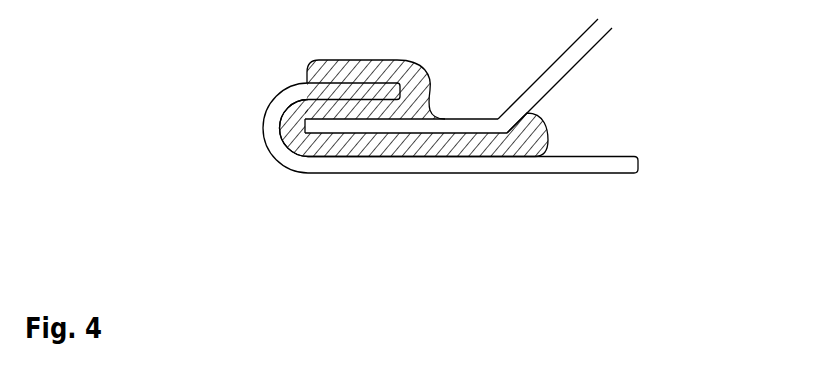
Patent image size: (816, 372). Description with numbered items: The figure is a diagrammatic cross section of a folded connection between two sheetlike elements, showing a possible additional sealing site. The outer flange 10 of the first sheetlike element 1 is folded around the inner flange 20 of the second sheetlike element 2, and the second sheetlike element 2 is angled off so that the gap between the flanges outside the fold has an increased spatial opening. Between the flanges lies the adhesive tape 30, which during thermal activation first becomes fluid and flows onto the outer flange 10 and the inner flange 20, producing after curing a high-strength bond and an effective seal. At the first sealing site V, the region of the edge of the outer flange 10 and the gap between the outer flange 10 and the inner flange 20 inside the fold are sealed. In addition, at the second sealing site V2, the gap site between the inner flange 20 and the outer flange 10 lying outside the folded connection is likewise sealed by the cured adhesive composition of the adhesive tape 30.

The first sheetlike element 1 is at (598, 164).
The outer flange 10 is at (312, 162).
The second sheetlike element 2 is at (568, 62).
The inner flange 20 is at (355, 125).
The adhesive tape 30 is at (443, 145).
The sealing site V is at (420, 95).
The sealing site V2 is at (557, 128).